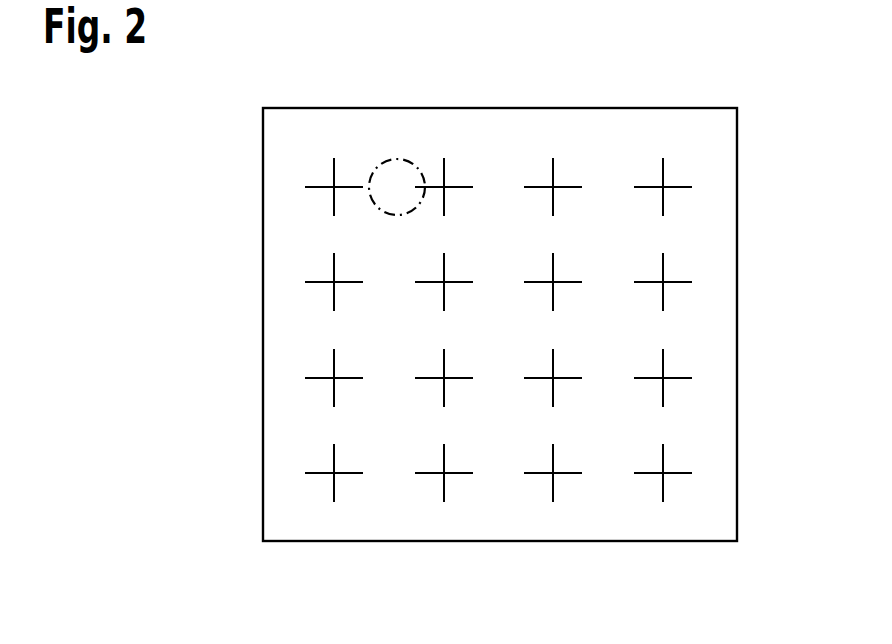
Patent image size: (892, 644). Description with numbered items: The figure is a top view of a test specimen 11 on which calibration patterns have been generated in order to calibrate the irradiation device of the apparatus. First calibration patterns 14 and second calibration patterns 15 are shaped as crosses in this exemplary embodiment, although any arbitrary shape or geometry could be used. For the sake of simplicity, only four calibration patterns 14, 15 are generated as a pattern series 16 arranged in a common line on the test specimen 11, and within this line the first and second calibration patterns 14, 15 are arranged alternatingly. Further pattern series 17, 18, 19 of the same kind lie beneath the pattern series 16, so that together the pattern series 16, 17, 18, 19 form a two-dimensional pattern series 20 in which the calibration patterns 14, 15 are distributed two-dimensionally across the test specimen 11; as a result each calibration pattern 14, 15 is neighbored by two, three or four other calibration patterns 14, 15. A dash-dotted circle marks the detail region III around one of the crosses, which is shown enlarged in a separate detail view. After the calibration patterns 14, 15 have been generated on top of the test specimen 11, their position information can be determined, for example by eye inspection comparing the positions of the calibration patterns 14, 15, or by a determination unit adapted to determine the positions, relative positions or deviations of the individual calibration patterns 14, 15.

The test specimen 11 is at (313, 108).
The detail region III is at (401, 159).
The first calibration pattern 14 is at (334, 187).
The second calibration pattern 15 is at (444, 187).
The pattern series 16 is at (284, 198).
The pattern series 17 is at (284, 293).
The pattern series 18 is at (284, 389).
The pattern series 19 is at (284, 484).
The two-dimensional pattern series 20 is at (706, 513).